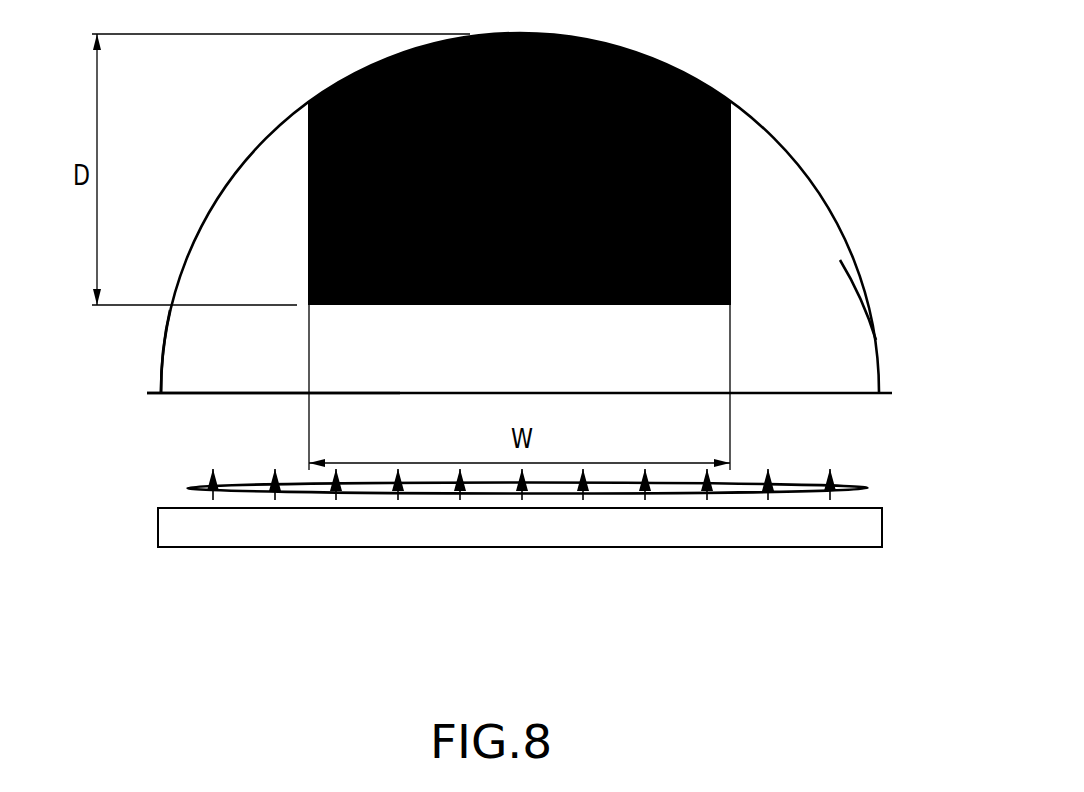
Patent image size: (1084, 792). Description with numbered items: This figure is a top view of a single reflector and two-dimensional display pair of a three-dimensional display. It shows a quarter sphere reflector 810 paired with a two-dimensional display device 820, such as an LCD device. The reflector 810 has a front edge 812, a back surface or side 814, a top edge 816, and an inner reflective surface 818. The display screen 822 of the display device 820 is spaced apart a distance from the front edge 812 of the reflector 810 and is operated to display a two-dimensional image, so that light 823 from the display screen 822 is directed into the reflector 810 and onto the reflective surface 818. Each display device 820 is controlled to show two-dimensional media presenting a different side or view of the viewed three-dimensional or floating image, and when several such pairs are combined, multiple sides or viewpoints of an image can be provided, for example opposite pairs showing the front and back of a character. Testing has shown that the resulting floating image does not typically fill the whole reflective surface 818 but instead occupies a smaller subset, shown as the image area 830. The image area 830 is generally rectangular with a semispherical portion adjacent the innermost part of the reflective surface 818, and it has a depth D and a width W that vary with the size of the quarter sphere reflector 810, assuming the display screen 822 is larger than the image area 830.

The quarter sphere reflector 810 is at (872, 182).
The front edge 812 is at (863, 393).
The back surface 814 is at (871, 306).
The top edge 816 is at (160, 337).
The inner reflective surface 818 is at (203, 363).
The 2D display device 820 is at (551, 562).
The display screen 822 is at (782, 505).
The light 823 is at (865, 487).
The image area 830 is at (745, 135).